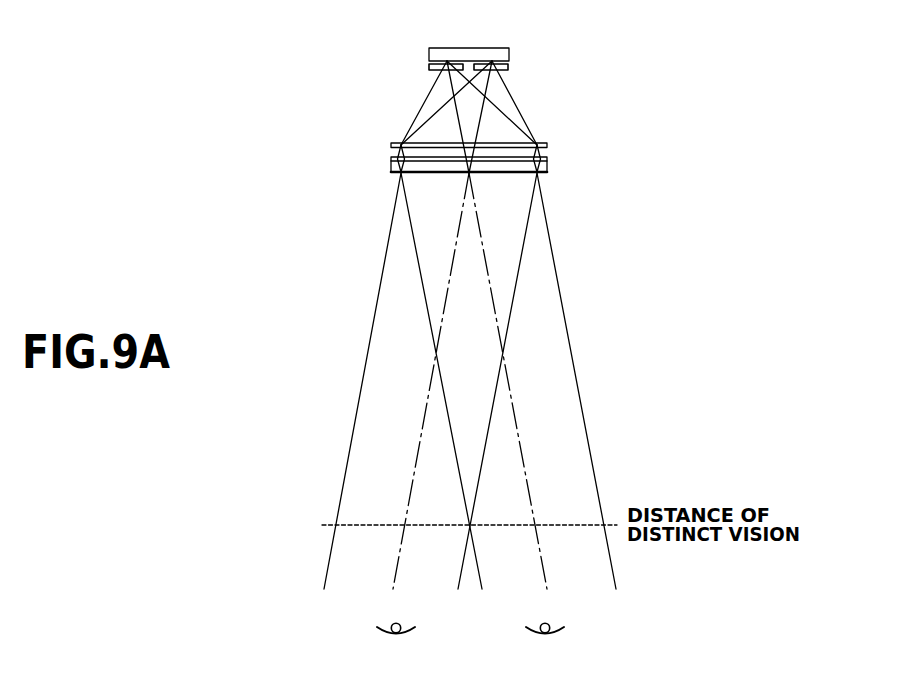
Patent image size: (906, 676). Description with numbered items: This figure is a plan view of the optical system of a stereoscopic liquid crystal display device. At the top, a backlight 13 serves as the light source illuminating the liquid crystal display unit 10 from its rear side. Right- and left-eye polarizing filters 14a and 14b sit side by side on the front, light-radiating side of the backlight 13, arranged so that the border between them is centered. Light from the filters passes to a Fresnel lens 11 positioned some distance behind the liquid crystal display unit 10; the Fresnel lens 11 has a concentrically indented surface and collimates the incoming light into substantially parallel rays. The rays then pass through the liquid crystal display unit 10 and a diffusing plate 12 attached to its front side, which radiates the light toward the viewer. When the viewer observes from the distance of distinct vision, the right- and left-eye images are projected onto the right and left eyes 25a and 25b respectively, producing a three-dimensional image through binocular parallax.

The backlight 13 is at (429, 55).
The right-eye polarizing filter 14a is at (433, 70).
The left-eye polarizing filter 14b is at (505, 70).
The Fresnel lens 11 is at (511, 143).
The liquid crystal display unit 10 is at (547, 163).
The diffusing plate 12 is at (520, 173).
The right eye 25a is at (550, 625).
The left eye 25b is at (391, 625).